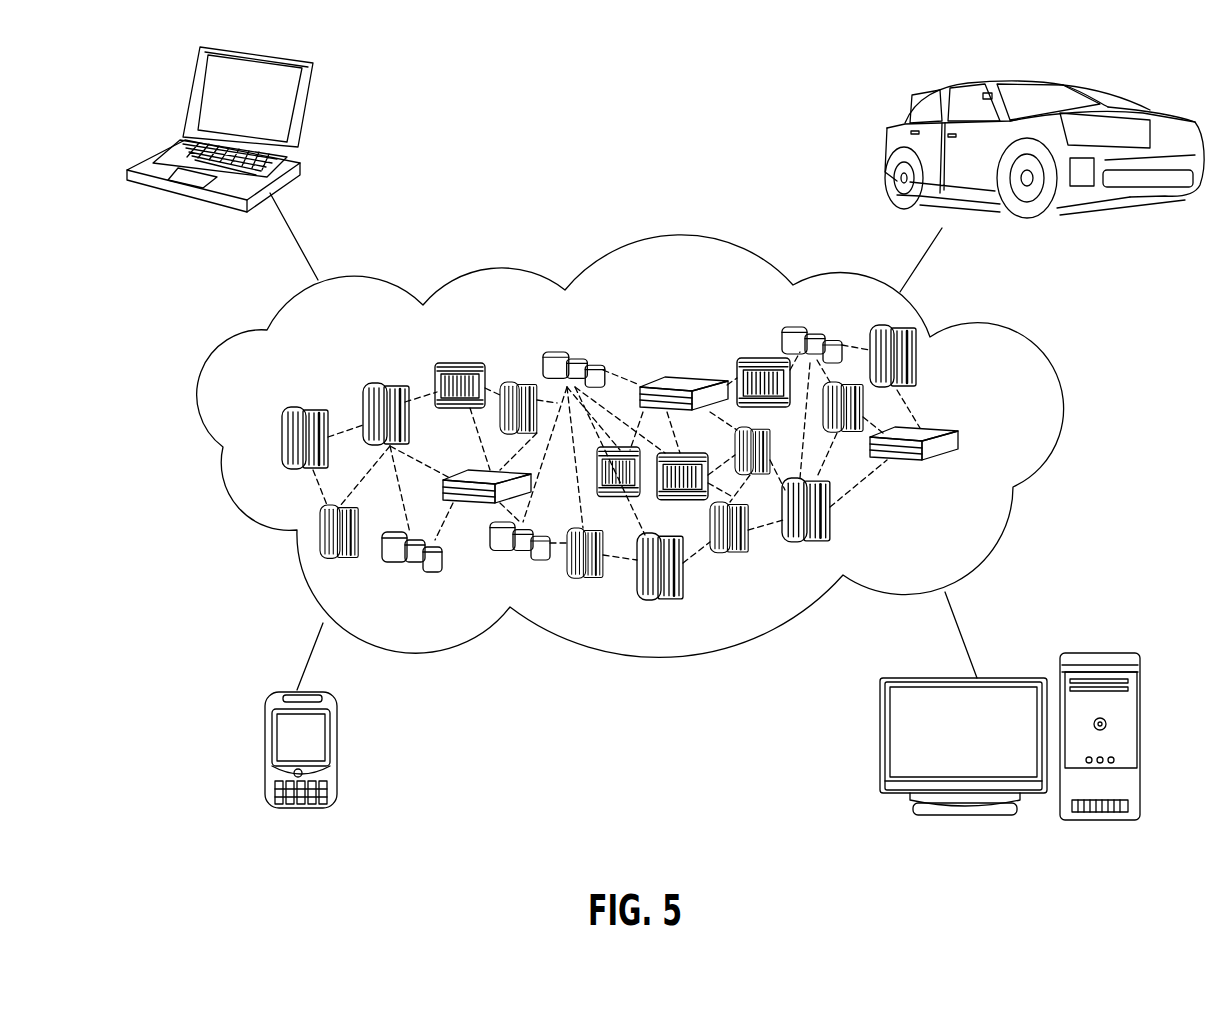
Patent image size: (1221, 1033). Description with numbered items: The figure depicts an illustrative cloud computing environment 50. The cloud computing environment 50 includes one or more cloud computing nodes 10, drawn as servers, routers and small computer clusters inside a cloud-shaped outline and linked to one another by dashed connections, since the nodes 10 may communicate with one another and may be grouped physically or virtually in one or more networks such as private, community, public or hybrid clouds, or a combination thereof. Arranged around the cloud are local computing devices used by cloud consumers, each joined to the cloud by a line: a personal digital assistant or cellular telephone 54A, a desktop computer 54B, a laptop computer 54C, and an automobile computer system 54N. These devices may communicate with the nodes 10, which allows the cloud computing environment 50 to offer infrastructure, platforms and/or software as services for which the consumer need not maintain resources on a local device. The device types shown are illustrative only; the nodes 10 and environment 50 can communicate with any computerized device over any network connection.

The cloud computing nodes 10 is at (1005, 441).
The cloud computing environment 50 is at (1023, 353).
The personal digital assistant (PDA) or cellular telephone 54A is at (263, 757).
The desktop computer 54B is at (1105, 653).
The laptop computer 54C is at (307, 118).
The automobile computer system 54N is at (890, 127).